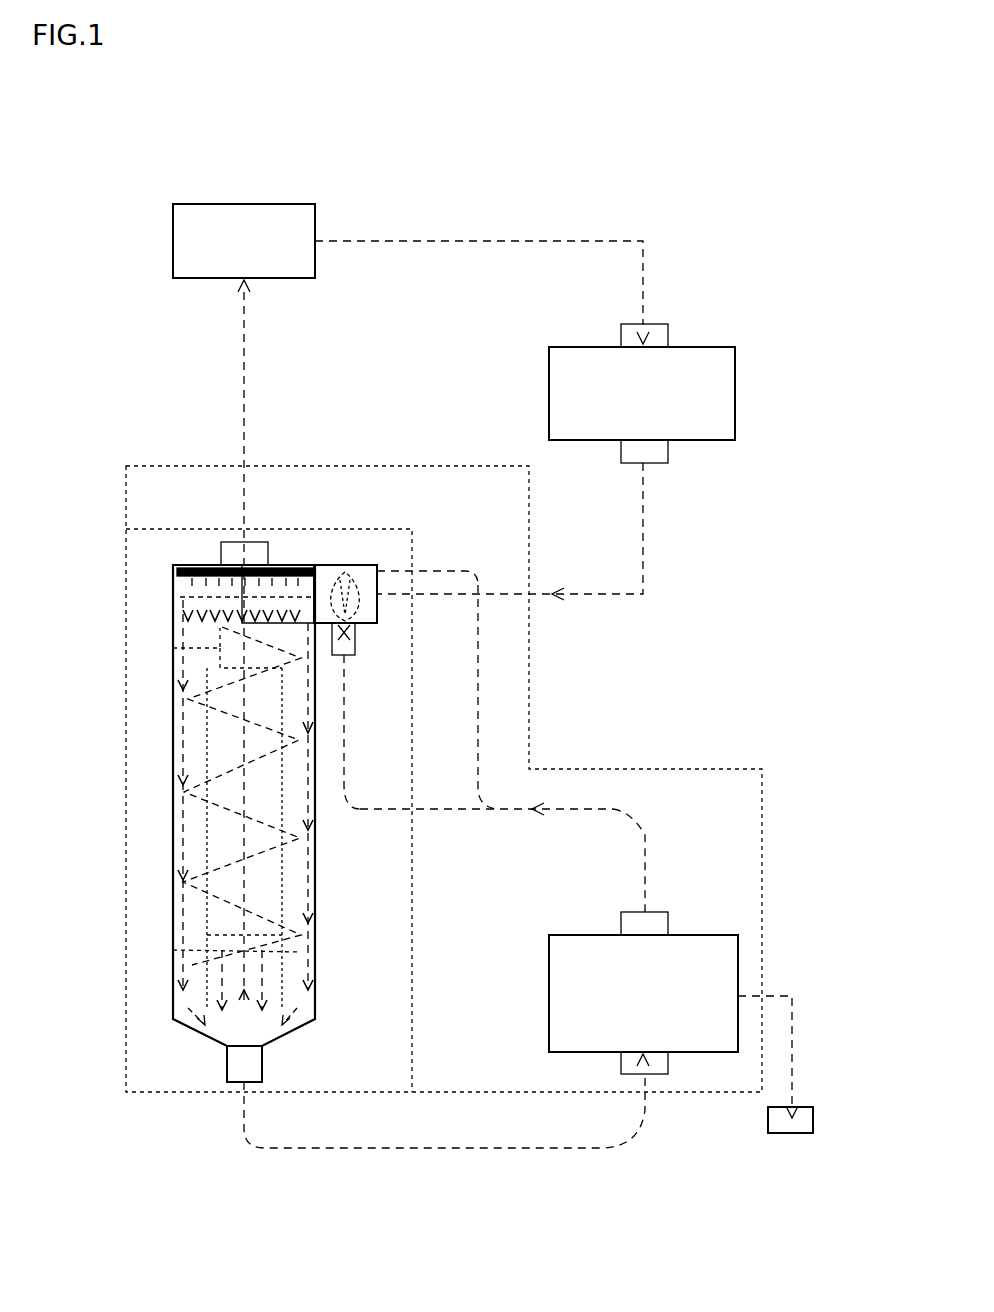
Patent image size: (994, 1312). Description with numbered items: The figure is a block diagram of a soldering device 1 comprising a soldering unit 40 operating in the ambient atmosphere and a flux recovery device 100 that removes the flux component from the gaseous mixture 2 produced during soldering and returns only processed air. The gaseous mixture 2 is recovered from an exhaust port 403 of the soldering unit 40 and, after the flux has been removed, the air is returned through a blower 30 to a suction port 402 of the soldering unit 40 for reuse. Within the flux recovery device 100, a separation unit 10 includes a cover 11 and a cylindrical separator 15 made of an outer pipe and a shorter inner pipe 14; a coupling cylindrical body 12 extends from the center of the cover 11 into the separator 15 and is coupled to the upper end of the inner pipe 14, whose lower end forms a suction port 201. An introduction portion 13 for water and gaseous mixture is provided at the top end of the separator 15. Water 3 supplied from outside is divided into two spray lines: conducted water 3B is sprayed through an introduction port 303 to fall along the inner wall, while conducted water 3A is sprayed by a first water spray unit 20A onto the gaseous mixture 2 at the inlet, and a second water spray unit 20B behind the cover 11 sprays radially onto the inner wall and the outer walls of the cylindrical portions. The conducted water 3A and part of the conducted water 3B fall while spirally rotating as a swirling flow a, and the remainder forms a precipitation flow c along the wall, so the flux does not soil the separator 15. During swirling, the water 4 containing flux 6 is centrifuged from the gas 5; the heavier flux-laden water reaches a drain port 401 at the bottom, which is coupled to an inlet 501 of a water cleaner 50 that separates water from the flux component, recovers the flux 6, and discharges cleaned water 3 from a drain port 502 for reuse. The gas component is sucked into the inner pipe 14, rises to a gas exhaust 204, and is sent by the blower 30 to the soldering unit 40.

The soldering device 1 is at (104, 204).
The blower 30 is at (288, 204).
The gas 5 is at (467, 241).
The soldering unit 40 is at (725, 347).
The suction port 402 is at (621, 335).
The exhaust port 403 is at (668, 463).
The gaseous mixture 2 is at (605, 600).
The flux recovery device 100 is at (136, 460).
The separation unit 10 is at (346, 530).
The second water spray unit 20B is at (191, 565).
The gas exhaust 204 is at (245, 560).
The cover 11 is at (306, 563).
The introduction portion 13 is at (368, 565).
The introduction port 303 is at (378, 590).
The first water spray unit 20A is at (355, 657).
The coupling cylindrical body 12 is at (173, 648).
The inner pipe 14 is at (316, 879).
The water 4 is at (173, 853).
The swirling flow a is at (173, 713).
The precipitation flow c is at (173, 746).
The separator 15 is at (173, 907).
The suction port 201 is at (173, 950).
The drain port 401 is at (227, 1076).
The conducted water 3B is at (478, 716).
The conducted water 3A is at (451, 822).
The water 3 is at (656, 835).
The water cleaner 50 is at (695, 935).
The drain port 502 is at (621, 912).
The inlet 501 is at (628, 1075).
The flux 6 is at (775, 1097).